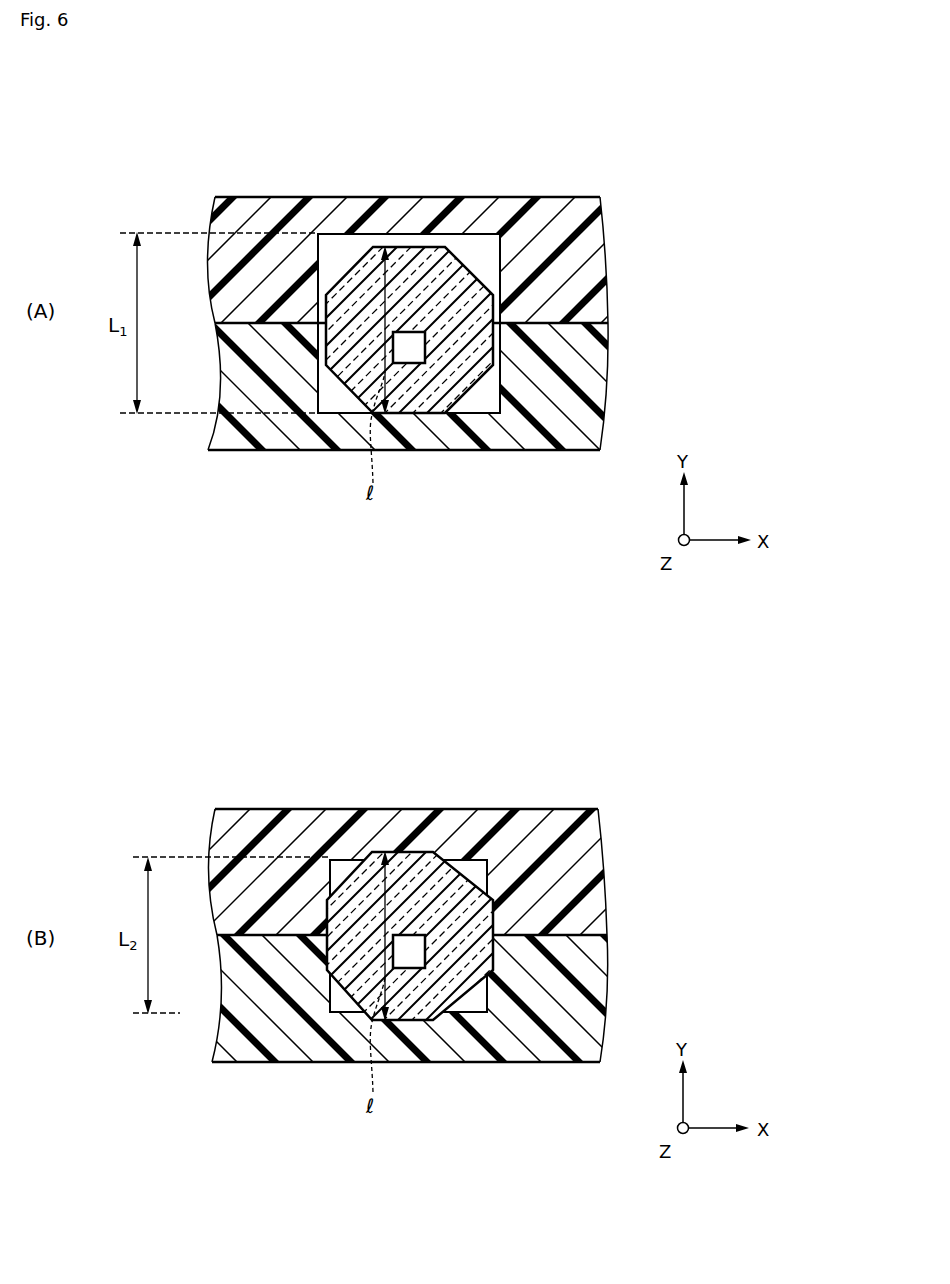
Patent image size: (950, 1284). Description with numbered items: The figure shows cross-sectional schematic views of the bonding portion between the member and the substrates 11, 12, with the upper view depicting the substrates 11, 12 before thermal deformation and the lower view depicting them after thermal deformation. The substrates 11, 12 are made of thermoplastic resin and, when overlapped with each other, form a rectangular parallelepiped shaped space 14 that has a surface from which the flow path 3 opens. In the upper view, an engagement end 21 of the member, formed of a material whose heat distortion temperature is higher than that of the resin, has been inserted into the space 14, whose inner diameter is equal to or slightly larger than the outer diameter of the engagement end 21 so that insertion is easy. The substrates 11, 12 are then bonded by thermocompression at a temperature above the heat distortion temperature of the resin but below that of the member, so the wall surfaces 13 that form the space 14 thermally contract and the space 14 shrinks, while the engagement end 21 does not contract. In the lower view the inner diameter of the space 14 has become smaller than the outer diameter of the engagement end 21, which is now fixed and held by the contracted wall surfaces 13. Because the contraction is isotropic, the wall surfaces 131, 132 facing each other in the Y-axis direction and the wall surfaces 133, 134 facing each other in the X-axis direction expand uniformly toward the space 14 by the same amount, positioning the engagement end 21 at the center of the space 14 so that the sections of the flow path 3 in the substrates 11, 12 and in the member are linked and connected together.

The flow path 3 is at (412, 366).
The substrate 11 is at (584, 264).
The substrate 12 is at (584, 379).
The wall surface 13 is at (415, 616).
The wall surface 131 is at (343, 861).
The wall surface 132 is at (496, 412).
The wall surface 133 is at (340, 412).
The wall surface 134 is at (483, 861).
The space 14 is at (500, 277).
The engagement end 21 is at (410, 240).